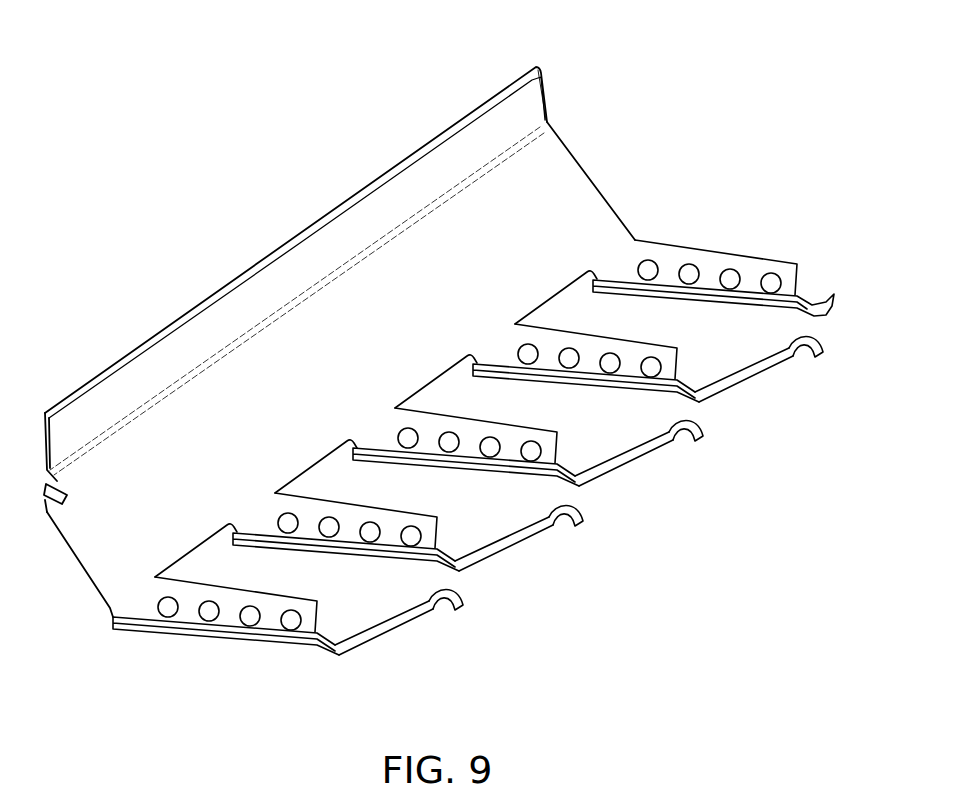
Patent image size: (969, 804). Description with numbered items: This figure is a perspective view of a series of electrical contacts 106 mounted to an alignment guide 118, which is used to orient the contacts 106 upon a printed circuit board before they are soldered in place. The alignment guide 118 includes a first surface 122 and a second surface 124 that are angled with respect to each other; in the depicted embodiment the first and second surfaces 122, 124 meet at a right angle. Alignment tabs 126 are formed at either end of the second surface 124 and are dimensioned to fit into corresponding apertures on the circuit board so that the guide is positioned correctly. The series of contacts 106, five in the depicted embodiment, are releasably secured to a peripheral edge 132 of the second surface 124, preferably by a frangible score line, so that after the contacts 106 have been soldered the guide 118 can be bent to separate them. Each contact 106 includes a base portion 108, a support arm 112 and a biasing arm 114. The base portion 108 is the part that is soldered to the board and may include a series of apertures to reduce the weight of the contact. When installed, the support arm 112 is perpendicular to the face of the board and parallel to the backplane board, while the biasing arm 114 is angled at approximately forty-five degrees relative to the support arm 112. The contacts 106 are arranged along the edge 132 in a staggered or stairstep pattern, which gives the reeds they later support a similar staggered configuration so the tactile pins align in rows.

The electrical contact 106 is at (473, 435).
The base portion 108 is at (476, 405).
The support arm 112 is at (473, 508).
The biasing arm 114 is at (578, 521).
The alignment guide 118 is at (607, 92).
The first surface 122 is at (487, 122).
The second surface 124 is at (580, 197).
The alignment tab 126 is at (547, 124).
The peripheral edge 132 is at (112, 612).